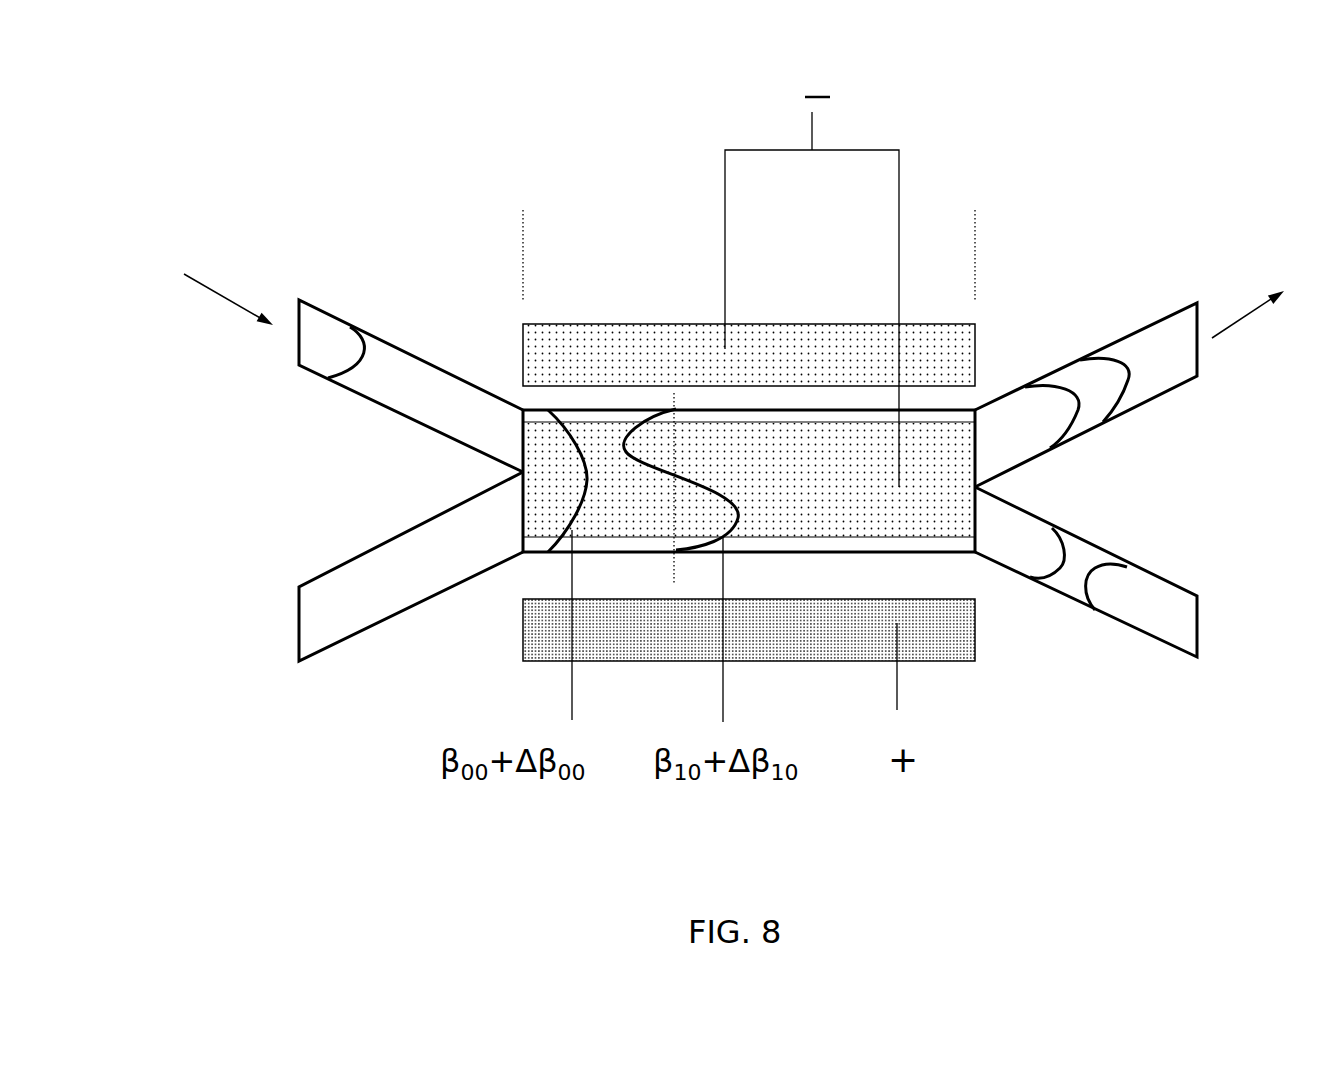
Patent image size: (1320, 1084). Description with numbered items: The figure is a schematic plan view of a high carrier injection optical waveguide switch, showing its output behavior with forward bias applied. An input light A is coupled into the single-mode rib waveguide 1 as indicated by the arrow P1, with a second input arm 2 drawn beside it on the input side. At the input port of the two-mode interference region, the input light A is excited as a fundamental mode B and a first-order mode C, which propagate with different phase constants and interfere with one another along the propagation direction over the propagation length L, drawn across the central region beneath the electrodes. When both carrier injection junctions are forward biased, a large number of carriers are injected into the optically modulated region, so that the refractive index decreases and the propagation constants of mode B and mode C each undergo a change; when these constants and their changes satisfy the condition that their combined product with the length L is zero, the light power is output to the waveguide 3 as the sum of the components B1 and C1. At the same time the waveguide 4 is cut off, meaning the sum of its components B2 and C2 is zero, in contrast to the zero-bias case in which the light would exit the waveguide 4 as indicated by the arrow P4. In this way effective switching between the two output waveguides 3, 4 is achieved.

The single-mode rib waveguide 1 is at (394, 386).
The input port 2 waveguide arm 2 is at (379, 567).
The waveguide 3 is at (1101, 395).
The waveguide 4 is at (1106, 573).
The input light A is at (366, 363).
The fundamental mode B is at (587, 481).
The first-order mode C is at (682, 479).
The fundamental mode component at waveguide 3 B1 is at (1042, 394).
The first-order mode component at waveguide 3 C1 is at (1098, 362).
The fundamental mode component at waveguide 4 B2 is at (1027, 578).
The first-order mode component at waveguide 4 C2 is at (1090, 612).
The propagation length L is at (957, 251).
The input light arrow P1 is at (228, 277).
The output light arrow at waveguide 4 P4 is at (1248, 292).